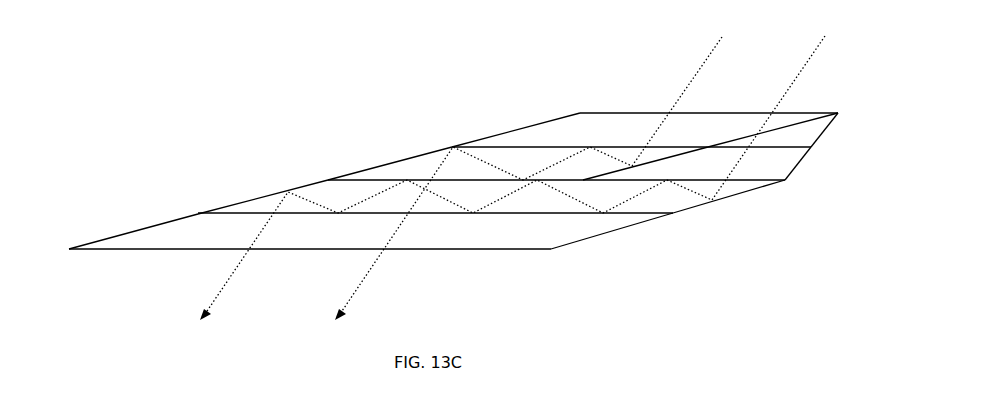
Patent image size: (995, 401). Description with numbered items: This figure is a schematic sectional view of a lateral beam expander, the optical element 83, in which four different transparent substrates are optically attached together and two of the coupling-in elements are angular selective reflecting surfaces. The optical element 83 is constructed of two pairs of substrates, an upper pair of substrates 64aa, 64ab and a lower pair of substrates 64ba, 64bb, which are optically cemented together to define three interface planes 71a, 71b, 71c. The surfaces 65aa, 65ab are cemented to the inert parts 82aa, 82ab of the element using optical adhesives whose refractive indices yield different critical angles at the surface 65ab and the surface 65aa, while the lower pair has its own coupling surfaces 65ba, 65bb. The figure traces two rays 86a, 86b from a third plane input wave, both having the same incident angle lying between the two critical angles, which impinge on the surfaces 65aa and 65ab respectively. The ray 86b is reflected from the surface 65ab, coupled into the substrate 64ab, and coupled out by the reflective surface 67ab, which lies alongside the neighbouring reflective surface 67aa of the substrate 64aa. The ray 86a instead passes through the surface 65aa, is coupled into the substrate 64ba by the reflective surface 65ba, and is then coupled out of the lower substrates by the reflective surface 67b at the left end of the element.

The optical element 83 is at (342, 122).
The ray 86a is at (820, 40).
The ray 86b is at (712, 47).
The reflective surface 67aa is at (492, 137).
The reflective surface 67ab is at (400, 162).
The reflective surface 67b is at (134, 230).
The interface plane 71a is at (580, 145).
The interface plane 71b is at (327, 179).
The interface plane 71c is at (195, 213).
The substrate 64aa is at (542, 142).
The substrate 64ab is at (442, 163).
The substrate 64ba is at (494, 205).
The substrate 64bb is at (438, 232).
The surface 65aa is at (793, 117).
The surface 65ab is at (667, 157).
The reflective surface 65ba is at (720, 198).
The surface 65bb is at (632, 225).
The inert part 82aa is at (813, 135).
The inert part 82ab is at (787, 180).